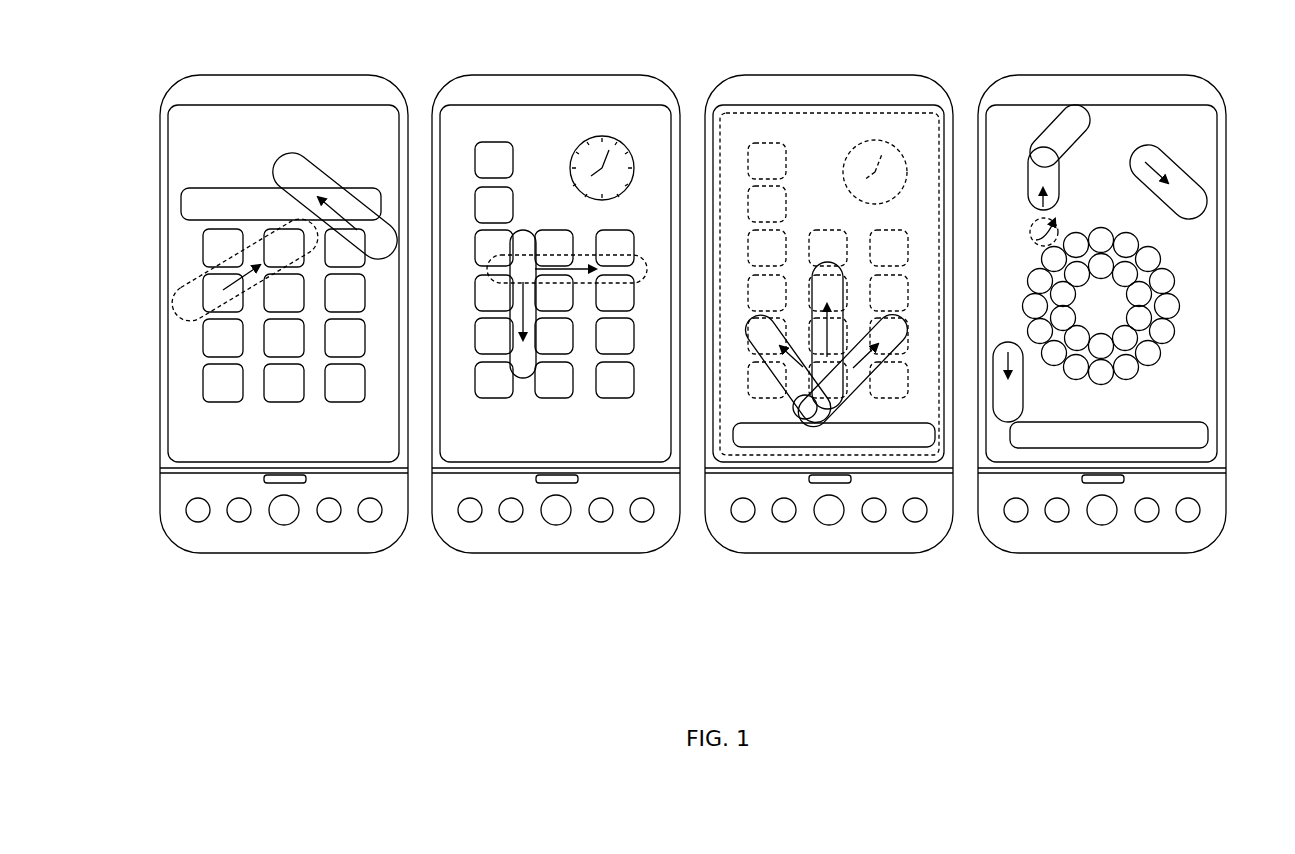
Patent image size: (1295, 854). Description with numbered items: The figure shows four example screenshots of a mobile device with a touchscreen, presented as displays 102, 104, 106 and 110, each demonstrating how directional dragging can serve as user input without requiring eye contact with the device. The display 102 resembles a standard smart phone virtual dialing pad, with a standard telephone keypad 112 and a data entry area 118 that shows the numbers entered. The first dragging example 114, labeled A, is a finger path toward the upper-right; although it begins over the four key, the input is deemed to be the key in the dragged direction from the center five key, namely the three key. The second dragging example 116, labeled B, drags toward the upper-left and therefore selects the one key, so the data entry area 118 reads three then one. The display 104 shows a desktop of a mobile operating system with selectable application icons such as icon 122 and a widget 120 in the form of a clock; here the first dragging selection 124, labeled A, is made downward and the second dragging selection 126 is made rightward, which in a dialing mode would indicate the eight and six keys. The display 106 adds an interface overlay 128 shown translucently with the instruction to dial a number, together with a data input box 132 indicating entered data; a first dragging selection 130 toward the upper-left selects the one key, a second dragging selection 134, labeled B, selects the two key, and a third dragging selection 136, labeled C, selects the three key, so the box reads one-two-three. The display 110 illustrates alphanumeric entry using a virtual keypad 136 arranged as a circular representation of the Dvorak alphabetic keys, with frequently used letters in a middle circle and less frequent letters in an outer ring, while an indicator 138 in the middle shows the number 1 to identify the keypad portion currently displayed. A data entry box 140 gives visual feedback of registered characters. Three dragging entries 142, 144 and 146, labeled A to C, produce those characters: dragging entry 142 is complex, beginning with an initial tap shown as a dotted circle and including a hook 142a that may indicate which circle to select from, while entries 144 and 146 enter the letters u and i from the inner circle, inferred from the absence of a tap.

The display 102 is at (222, 75).
The display 104 is at (492, 75).
The display 106 is at (768, 75).
The display 110 is at (1040, 75).
The telephone keypad 112 is at (201, 337).
The first dragging example 114 is at (180, 303).
The second dragging example 116 is at (306, 152).
The data entry area 118 is at (181, 203).
The widget 120 is at (602, 137).
The icon 122 is at (493, 142).
The first dragging selection 124 is at (523, 380).
The second dragging selection 126 is at (548, 256).
The interface overlay 128 is at (790, 112).
The first dragging selection 130 is at (790, 377).
The data input box 132 is at (757, 430).
The second dragging selection 134 is at (826, 262).
The third dragging selection 136 is at (823, 420).
The indicator 138 is at (1166, 284).
The data entry box 140 is at (1208, 433).
The dragging entry 142 is at (1031, 192).
The hook 142a is at (1043, 152).
The dragging entry 144 is at (1175, 172).
The dragging entry 146 is at (992, 382).
The selected letter indicator 1 is at (1130, 298).